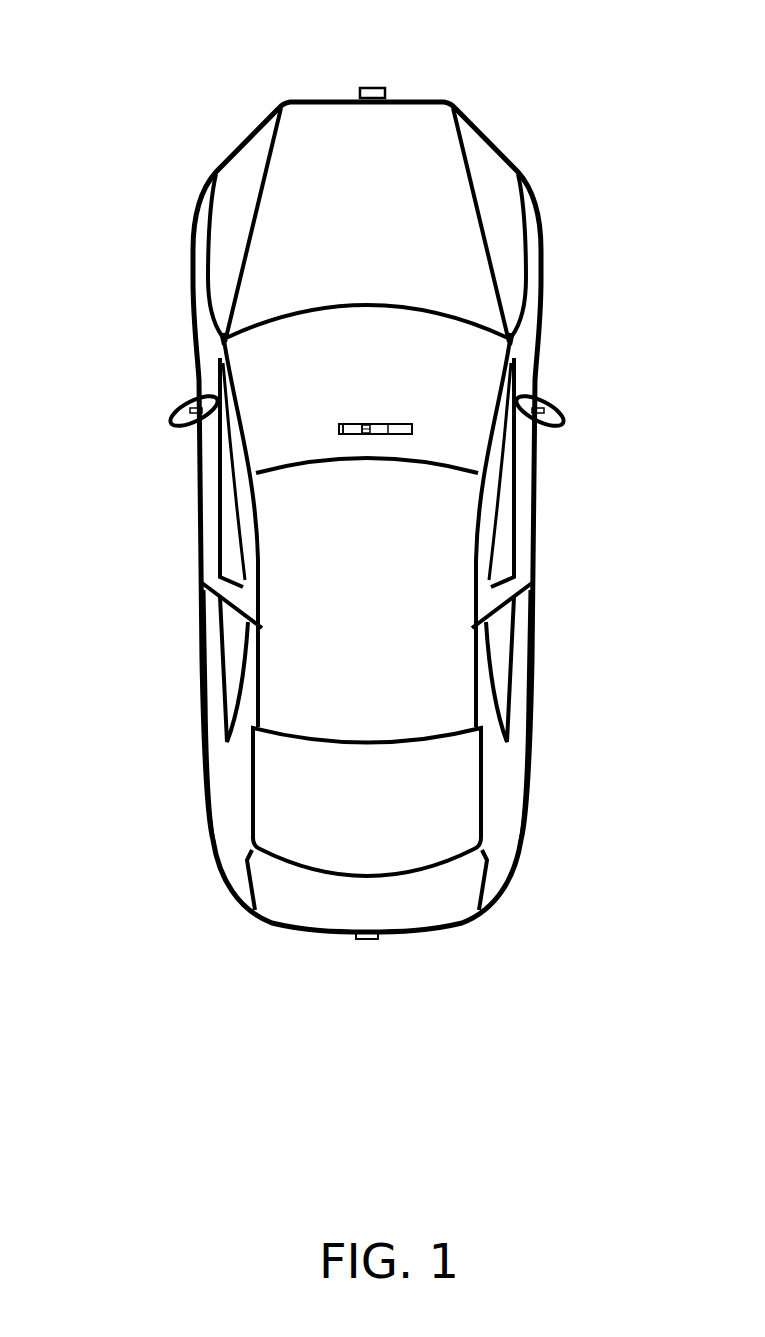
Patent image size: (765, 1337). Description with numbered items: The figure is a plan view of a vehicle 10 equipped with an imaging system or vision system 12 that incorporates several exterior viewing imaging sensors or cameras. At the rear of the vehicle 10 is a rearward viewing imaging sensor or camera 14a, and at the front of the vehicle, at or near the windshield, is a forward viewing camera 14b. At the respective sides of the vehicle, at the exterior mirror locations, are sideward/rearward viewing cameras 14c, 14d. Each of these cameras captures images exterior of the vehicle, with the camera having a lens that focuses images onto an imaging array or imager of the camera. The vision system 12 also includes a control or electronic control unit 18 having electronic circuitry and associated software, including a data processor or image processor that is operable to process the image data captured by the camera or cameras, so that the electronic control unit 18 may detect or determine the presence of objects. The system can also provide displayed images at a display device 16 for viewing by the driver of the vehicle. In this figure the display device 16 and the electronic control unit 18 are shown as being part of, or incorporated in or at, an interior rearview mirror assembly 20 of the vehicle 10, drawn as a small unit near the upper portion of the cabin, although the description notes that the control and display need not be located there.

The vehicle 10 is at (333, 522).
The vision system 12 is at (328, 950).
The rearward viewing camera 14a is at (373, 939).
The forward viewing camera 14b is at (378, 88).
The sideward/rearward viewing camera 14c is at (180, 403).
The sideward/rearward viewing camera 14d is at (550, 403).
The display device 16 is at (353, 424).
The electronic control unit 18 is at (372, 424).
The interior rearview mirror assembly 20 is at (412, 422).